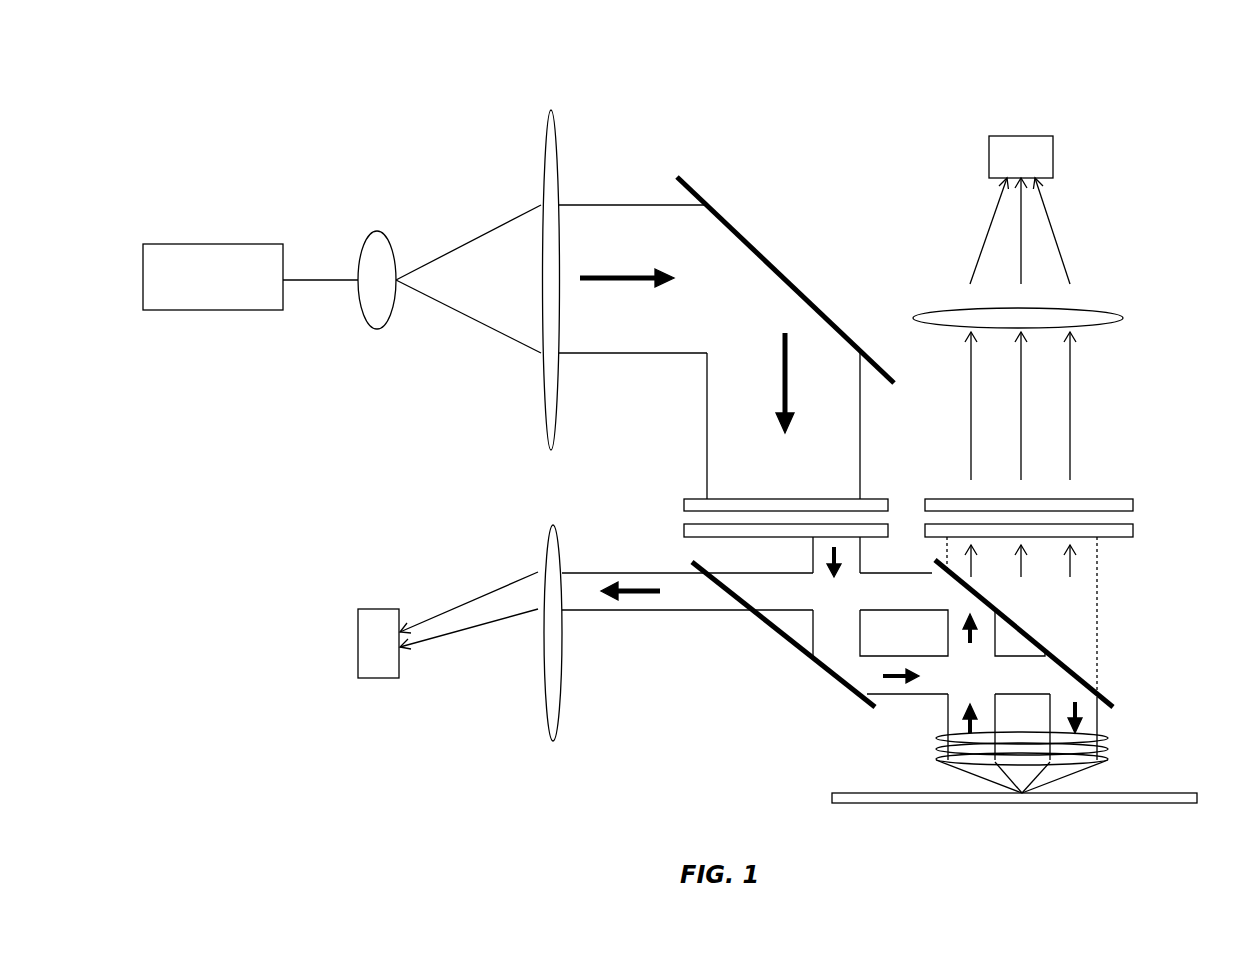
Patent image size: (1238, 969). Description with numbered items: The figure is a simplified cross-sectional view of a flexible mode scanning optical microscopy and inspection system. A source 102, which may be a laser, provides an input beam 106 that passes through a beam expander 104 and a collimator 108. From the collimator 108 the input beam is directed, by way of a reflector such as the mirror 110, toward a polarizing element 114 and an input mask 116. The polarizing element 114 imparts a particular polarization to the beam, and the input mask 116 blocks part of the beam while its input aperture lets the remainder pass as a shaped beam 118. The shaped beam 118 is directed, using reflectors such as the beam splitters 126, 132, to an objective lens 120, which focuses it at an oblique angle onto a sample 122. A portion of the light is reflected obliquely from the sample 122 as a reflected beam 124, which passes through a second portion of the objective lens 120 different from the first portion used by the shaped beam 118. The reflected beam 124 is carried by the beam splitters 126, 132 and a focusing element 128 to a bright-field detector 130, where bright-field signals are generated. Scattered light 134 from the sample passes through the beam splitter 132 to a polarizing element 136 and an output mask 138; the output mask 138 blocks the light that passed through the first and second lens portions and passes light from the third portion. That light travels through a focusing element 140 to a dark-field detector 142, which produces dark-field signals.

The source 102 is at (213, 277).
The beam expander 104 is at (377, 329).
The input beam 106 is at (330, 273).
The collimator 108 is at (550, 110).
The mirror 110 is at (785, 273).
The polarizing element 114 is at (685, 499).
The input mask 116 is at (685, 524).
The shaped beam 118 is at (813, 568).
The objective lens 120 is at (1108, 745).
The sample 122 is at (832, 793).
The reflected beam 124 is at (948, 737).
The beam splitter 126 is at (778, 640).
The focusing element 128 is at (552, 742).
The bright-field detector 130 is at (358, 609).
The beam splitter 132 is at (1113, 703).
The scattered light 134 is at (1098, 616).
The polarizing element 136 is at (1133, 524).
The output mask 138 is at (1133, 499).
The focusing element 140 is at (1124, 318).
The dark-field detector 142 is at (1053, 136).